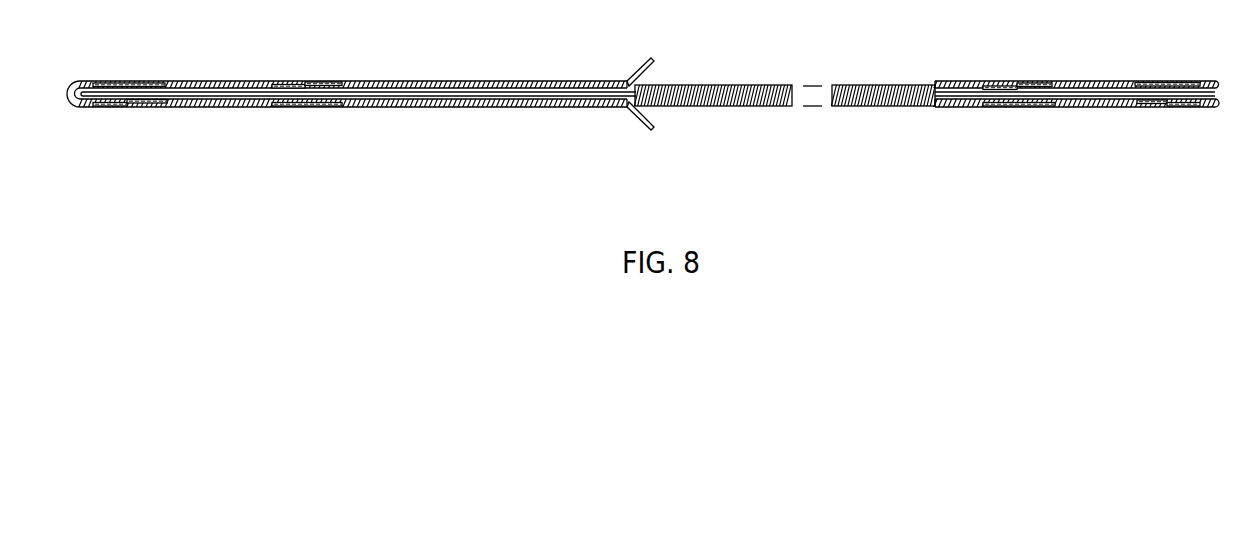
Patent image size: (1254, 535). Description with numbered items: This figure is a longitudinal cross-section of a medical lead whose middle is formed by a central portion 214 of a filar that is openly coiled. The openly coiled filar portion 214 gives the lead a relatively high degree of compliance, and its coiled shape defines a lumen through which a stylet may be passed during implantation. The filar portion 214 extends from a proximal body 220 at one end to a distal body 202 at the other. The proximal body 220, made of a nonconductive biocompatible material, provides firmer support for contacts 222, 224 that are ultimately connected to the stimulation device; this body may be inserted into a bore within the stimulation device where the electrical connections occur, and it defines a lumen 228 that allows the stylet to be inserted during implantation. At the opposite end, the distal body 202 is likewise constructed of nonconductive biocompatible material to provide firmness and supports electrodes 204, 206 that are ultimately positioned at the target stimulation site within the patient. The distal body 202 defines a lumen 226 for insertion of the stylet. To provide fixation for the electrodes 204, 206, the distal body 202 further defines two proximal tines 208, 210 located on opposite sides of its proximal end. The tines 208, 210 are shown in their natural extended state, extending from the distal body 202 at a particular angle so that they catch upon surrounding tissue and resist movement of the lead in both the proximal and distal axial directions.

The distal body 202 is at (222, 83).
The electrode 204 is at (135, 82).
The electrode 206 is at (313, 82).
The proximal tine 208 is at (648, 65).
The proximal tine 210 is at (645, 125).
The central portion of a filar 214 is at (742, 84).
The proximal body 220 is at (952, 82).
The contact 222 is at (1010, 108).
The contact 224 is at (1150, 109).
The lumen 226 is at (80, 97).
The lumen 228 is at (1215, 94).